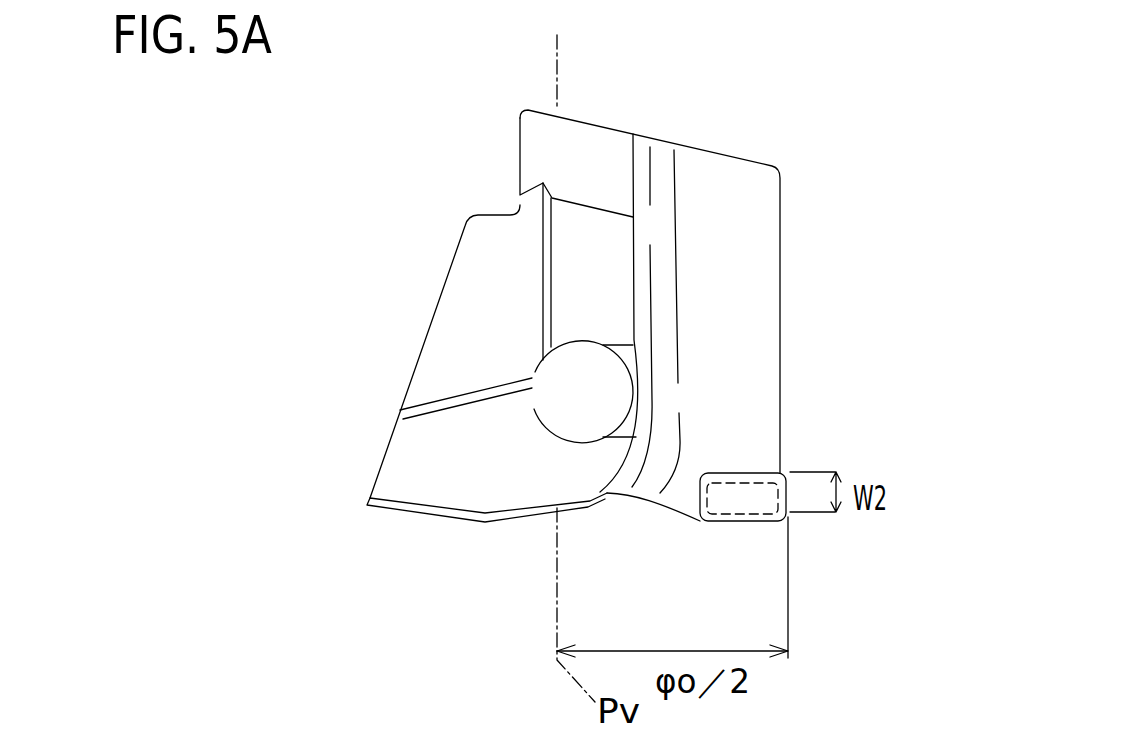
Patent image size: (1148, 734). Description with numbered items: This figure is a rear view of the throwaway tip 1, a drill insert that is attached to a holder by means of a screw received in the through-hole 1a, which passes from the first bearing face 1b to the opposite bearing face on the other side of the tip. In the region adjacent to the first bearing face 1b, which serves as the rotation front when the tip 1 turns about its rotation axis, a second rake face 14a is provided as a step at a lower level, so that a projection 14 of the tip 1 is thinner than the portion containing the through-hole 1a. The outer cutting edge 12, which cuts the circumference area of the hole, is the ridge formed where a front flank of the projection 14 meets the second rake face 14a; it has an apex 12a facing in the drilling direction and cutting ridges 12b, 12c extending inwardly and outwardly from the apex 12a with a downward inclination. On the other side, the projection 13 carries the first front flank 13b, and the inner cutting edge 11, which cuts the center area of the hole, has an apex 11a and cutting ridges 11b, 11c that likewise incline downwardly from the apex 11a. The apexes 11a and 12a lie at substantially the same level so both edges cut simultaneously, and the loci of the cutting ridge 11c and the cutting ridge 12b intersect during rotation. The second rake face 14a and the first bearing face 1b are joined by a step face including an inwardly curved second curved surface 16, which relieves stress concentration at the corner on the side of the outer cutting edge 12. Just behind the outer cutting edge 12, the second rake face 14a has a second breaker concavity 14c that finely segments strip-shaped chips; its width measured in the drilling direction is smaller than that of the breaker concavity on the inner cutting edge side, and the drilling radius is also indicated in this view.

The throwaway tip 1 is at (817, 117).
The through-hole 1a is at (535, 398).
The first bearing face 1b is at (585, 268).
The inner cutting edge 11 is at (542, 638).
The apex 11a is at (488, 523).
The cutting ridge 11b is at (527, 522).
The cutting ridge 11c is at (420, 520).
The outer cutting edge 12 is at (780, 576).
The apex 12a is at (705, 523).
The cutting ridge 12b is at (672, 512).
The cutting ridge 12c is at (743, 523).
The projection 13 is at (399, 369).
The first front flank 13b is at (397, 507).
The projection 14 is at (780, 260).
The second rake face 14a is at (753, 407).
The second breaker concavity 14c is at (730, 487).
The second curved surface 16 is at (668, 357).